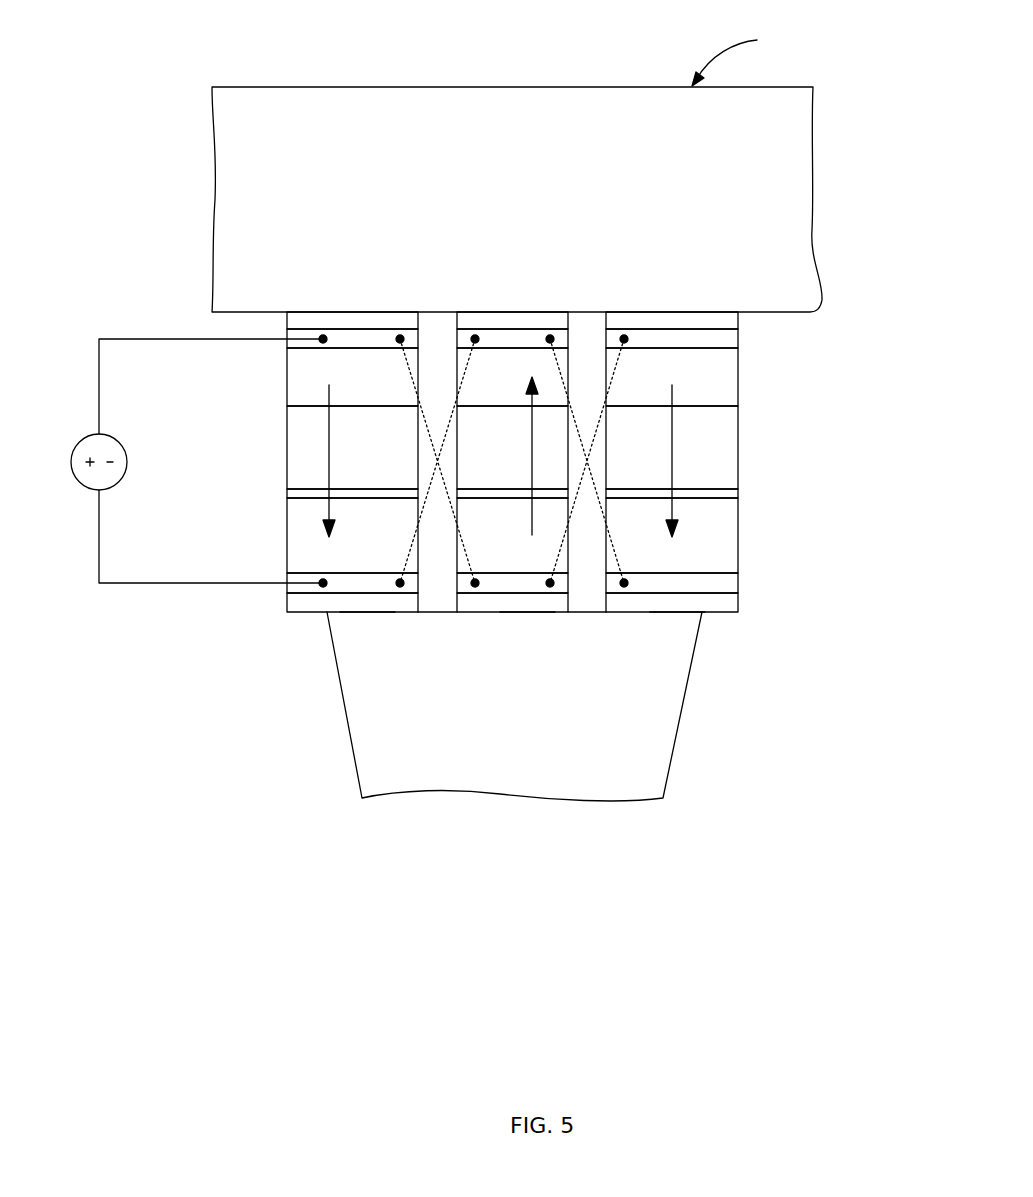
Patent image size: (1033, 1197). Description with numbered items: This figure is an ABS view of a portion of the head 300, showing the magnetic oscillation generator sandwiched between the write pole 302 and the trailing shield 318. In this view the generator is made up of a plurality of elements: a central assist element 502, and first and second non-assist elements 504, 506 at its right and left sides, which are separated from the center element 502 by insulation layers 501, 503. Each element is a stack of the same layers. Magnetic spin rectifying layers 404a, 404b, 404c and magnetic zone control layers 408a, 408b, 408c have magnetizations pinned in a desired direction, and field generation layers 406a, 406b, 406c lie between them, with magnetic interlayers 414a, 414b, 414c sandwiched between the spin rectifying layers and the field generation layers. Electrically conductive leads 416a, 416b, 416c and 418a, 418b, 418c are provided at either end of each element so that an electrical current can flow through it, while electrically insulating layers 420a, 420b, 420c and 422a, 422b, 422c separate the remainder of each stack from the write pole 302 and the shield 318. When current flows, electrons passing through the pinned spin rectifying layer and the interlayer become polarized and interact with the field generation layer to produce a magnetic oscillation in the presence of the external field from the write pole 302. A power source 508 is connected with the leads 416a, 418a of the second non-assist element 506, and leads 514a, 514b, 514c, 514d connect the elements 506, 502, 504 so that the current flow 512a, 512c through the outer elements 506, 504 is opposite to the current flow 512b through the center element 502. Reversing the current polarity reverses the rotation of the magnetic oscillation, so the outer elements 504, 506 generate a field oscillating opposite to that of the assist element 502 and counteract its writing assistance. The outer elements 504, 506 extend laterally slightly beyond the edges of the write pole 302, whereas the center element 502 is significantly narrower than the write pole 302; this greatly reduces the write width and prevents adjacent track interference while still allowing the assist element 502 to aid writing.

The head 300 is at (749, 56).
The write pole 302 is at (552, 705).
The trailing shield 318 is at (552, 195).
The magnetic spin rectifying layer 404a is at (298, 527).
The magnetic spin rectifying layer 404b is at (500, 557).
The magnetic spin rectifying layer 404c is at (720, 537).
The field generation layer 406a is at (307, 437).
The field generation layer 406b is at (470, 447).
The field generation layer 406c is at (715, 453).
The magnetic zone control layer 408a is at (320, 372).
The magnetic zone control layer 408b is at (492, 382).
The magnetic zone control layer 408c is at (720, 386).
The magnetic interlayer 414a is at (290, 492).
The magnetic interlayer 414b is at (473, 493).
The magnetic interlayer 414c is at (730, 492).
The electrically conductive lead 416a is at (290, 588).
The electrically conductive lead 416b is at (480, 603).
The electrically conductive lead 416c is at (722, 582).
The electrically conductive lead 418a is at (292, 345).
The electrically conductive lead 418b is at (455, 387).
The electrically conductive lead 418c is at (730, 338).
The electrically insulating layer 420a is at (290, 602).
The electrically insulating layer 420b is at (510, 602).
The electrically insulating layer 420c is at (725, 602).
The electrically insulating layer 422a is at (307, 321).
The electrically insulating layer 422b is at (463, 320).
The electrically insulating layer 422c is at (730, 322).
The insulation layer 501 is at (590, 313).
The assist element 502 is at (527, 613).
The insulation layer 503 is at (437, 313).
The first non-assist element 504 is at (678, 613).
The second non-assist element 506 is at (367, 613).
The power source 508 is at (85, 438).
The current flow 512a is at (328, 472).
The current flow 512b is at (531, 463).
The current flow 512c is at (672, 433).
The lead 514a is at (400, 339).
The lead 514b is at (475, 339).
The lead 514c is at (550, 339).
The lead 514d is at (624, 339).